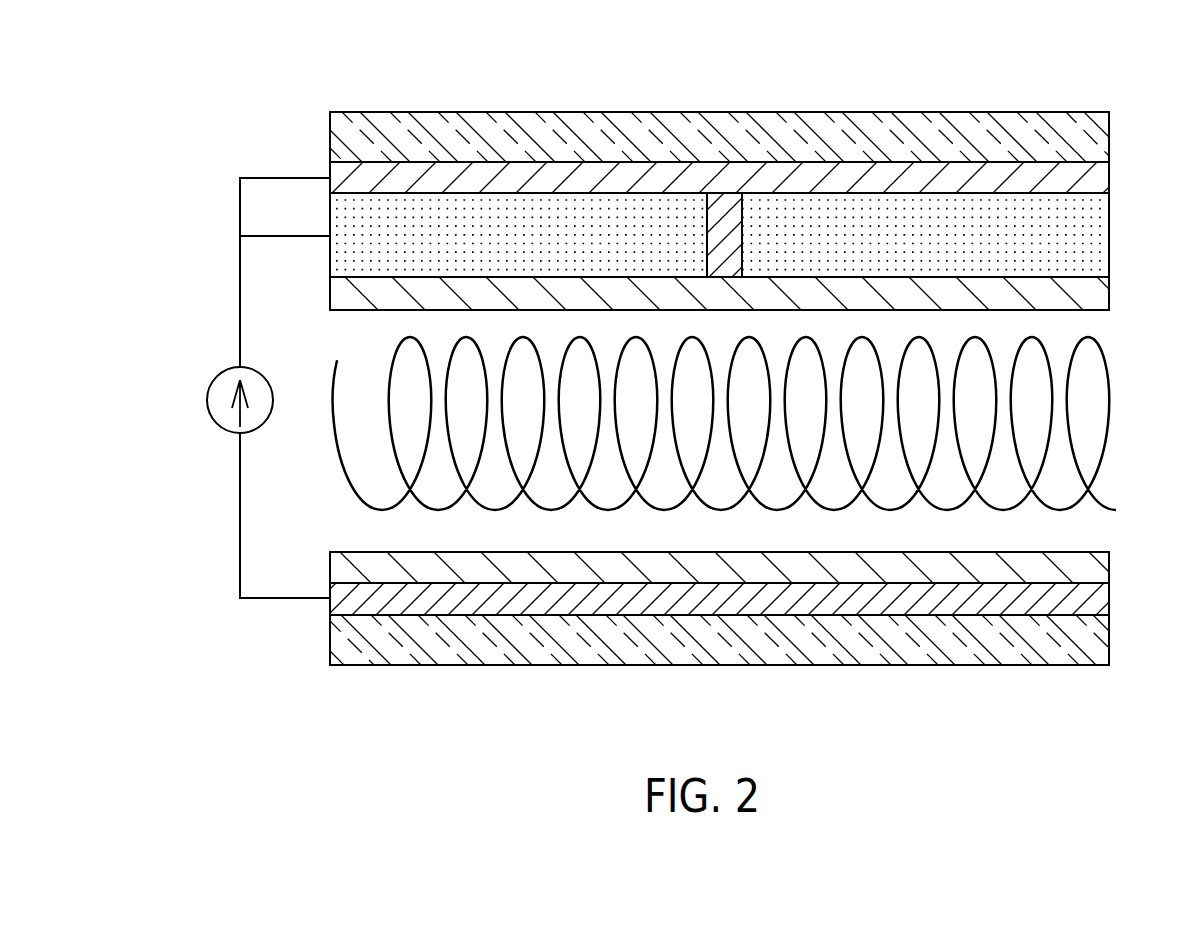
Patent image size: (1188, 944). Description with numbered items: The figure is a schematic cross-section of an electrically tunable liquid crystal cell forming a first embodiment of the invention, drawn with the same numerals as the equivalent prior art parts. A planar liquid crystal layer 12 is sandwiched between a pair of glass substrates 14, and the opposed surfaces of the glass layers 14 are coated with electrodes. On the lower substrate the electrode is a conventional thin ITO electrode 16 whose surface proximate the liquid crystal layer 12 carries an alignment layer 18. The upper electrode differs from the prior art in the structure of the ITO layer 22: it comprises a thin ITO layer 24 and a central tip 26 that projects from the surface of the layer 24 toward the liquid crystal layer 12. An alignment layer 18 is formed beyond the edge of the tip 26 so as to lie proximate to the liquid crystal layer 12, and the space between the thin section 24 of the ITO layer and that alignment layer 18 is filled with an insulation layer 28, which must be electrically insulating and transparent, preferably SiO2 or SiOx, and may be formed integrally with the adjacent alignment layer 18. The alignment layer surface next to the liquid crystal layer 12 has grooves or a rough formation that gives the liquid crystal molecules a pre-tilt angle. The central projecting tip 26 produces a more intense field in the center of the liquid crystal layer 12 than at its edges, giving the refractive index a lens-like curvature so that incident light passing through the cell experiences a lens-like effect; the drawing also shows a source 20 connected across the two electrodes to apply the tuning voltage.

The liquid crystal layer 12 is at (1108, 447).
The glass substrate 14 is at (921, 112).
The ITO electrode 16 is at (623, 592).
The alignment layer 18 is at (837, 292).
The current source 20 is at (208, 400).
The ITO layer 22 is at (983, 177).
The thin ITO layer 24 is at (543, 178).
The central tip 26 is at (725, 230).
The insulation layer 28 is at (463, 232).